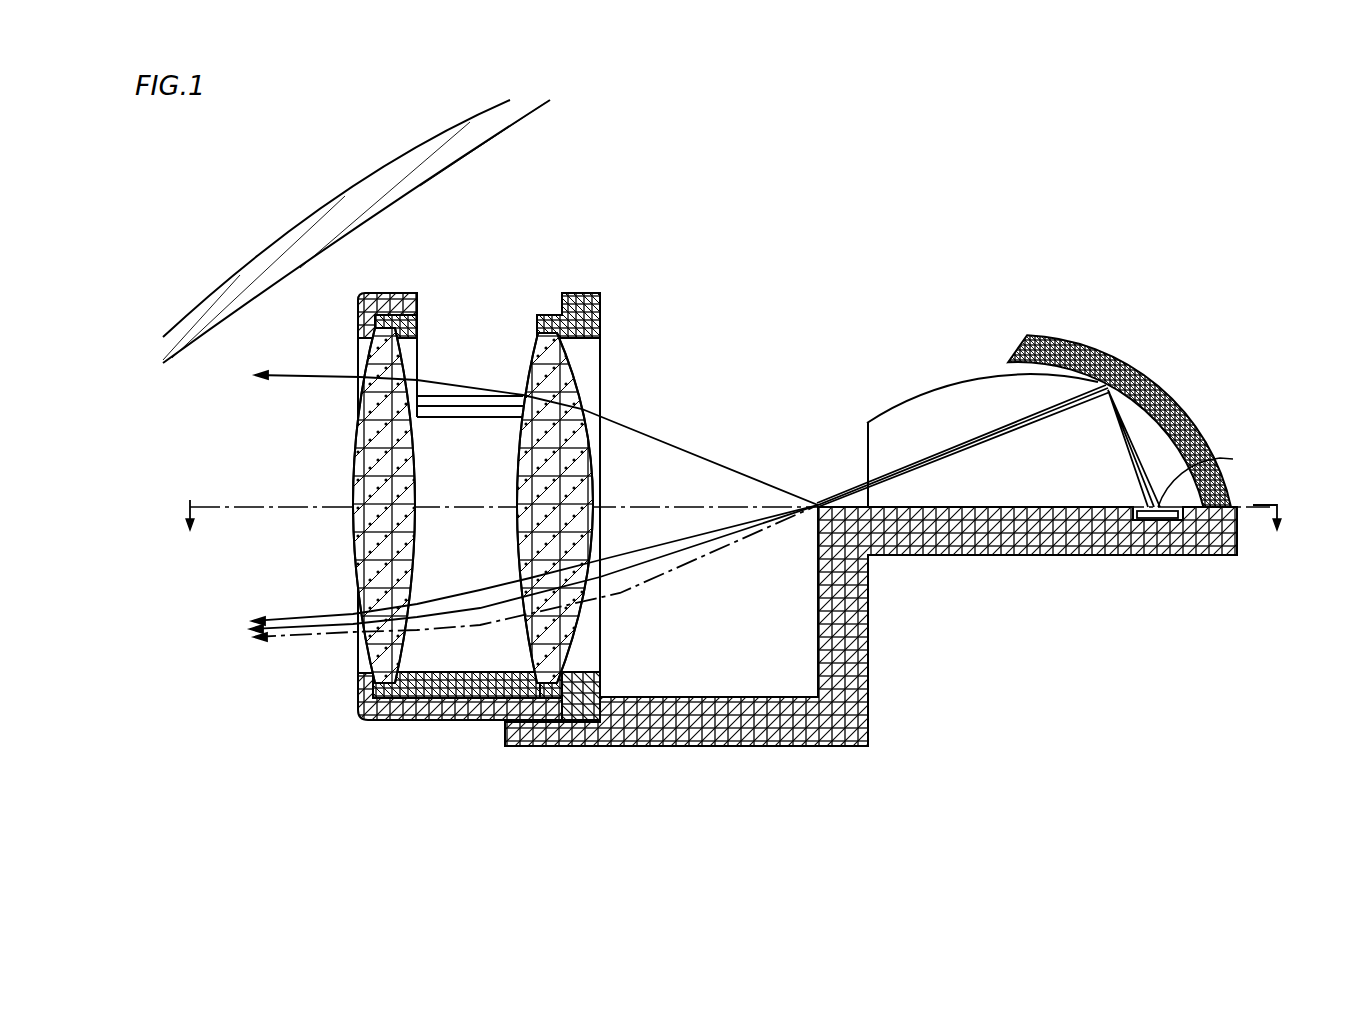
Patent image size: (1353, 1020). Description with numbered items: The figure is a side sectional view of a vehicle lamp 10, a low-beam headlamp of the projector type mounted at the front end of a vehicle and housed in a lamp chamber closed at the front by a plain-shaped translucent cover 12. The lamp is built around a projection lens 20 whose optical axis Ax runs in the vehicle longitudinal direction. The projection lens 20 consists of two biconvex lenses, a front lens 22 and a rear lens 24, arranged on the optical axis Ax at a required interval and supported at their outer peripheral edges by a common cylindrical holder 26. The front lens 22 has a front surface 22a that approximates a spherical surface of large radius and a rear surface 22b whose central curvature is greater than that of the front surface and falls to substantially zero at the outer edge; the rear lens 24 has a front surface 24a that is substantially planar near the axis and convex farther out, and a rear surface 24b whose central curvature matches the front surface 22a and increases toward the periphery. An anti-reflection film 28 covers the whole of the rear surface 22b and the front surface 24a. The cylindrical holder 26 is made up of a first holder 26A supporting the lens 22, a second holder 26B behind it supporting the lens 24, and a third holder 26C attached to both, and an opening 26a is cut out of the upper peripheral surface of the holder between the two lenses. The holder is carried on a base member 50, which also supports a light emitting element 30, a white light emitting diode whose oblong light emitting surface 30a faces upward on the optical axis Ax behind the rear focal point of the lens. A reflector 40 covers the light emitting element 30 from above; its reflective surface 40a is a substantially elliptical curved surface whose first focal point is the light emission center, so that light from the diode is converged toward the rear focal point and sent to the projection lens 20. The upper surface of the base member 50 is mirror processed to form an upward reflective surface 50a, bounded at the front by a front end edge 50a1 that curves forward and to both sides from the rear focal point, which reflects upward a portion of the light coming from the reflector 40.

The vehicle lamp 10 is at (733, 491).
The translucent cover 12 is at (338, 195).
The projection lens 20 is at (487, 439).
The lens 22 is at (385, 463).
The front surface 22a is at (356, 536).
The rear surface 22b is at (418, 533).
The lens 24 is at (568, 463).
The front surface 24a is at (517, 473).
The rear surface 24b is at (600, 475).
The cylindrical holder 26 is at (445, 562).
The opening 26a is at (467, 404).
The first holder 26A is at (490, 688).
The second holder 26B is at (573, 705).
The third holder 26C is at (377, 720).
The anti-reflection film 28 is at (472, 687).
The light emitting element 30 is at (1153, 483).
The light emitting surface 30a is at (1217, 478).
The reflector 40 is at (1068, 411).
The reflective surface 40a is at (1053, 388).
The base member 50 is at (871, 579).
The upward reflective surface 50a is at (893, 507).
The front end edge 50a1 is at (817, 501).
The optical axis Ax is at (284, 496).